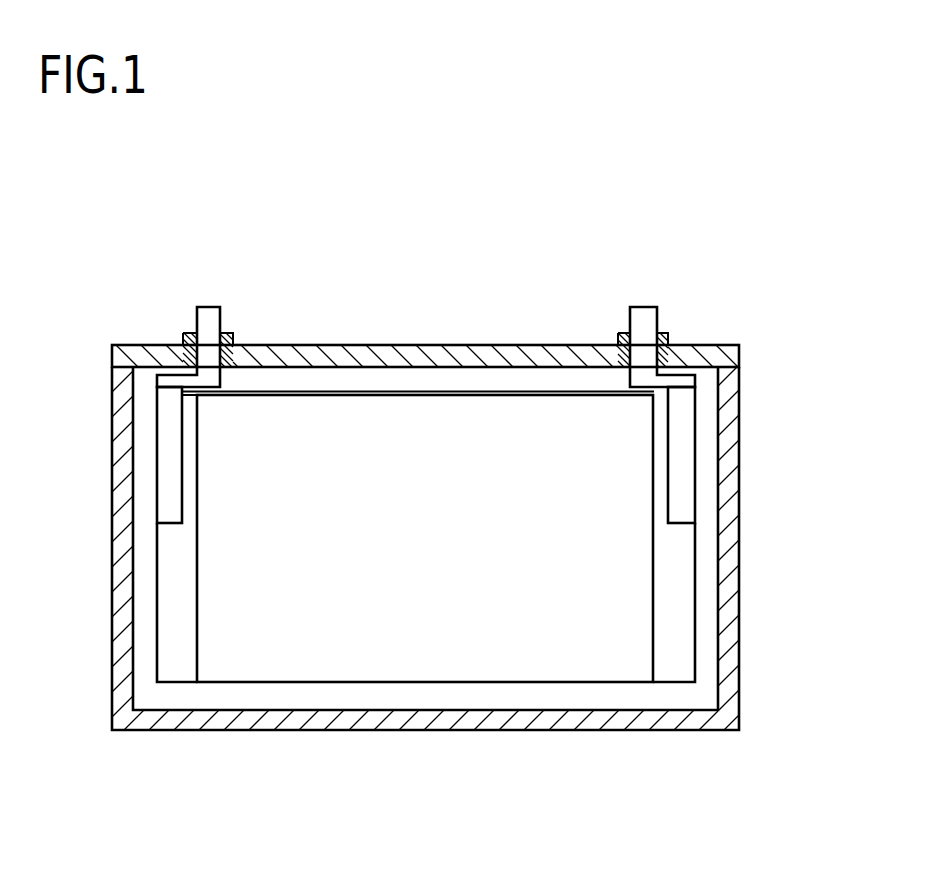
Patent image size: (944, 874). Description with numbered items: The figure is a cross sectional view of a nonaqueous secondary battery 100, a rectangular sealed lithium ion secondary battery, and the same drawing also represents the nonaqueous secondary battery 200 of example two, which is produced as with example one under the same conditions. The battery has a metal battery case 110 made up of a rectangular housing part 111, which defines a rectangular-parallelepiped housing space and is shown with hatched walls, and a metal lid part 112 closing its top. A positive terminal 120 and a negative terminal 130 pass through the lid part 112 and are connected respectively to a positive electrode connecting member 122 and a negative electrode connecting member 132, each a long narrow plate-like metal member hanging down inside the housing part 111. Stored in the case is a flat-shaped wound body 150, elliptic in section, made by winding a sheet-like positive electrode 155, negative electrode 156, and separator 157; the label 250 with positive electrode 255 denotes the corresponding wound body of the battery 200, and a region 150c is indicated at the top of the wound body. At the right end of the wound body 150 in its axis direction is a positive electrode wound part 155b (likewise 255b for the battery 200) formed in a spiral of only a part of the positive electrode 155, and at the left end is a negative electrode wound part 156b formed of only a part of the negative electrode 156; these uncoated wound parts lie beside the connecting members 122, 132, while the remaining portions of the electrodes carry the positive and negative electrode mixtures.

The nonaqueous secondary battery 100 is at (482, 253).
The nonaqueous secondary battery 200 is at (454, 531).
The battery case 110 is at (795, 312).
The rectangular housing part 111 is at (727, 378).
The lid part 112 is at (726, 355).
The positive terminal 120 is at (646, 320).
The positive electrode connecting member 122 is at (687, 510).
The negative terminal 130 is at (211, 320).
The negative electrode connecting member 132 is at (168, 508).
The wound body 150 is at (348, 657).
The electrode assembly (second embodiment) 250 is at (454, 476).
The upper end of electrode assembly 150c is at (268, 392).
The positive electrode 155 is at (454, 476).
The positive electrode (second embodiment) 255 is at (454, 476).
The negative electrode 156 is at (454, 476).
The separator 157 is at (454, 476).
The positive electrode wound part 155b is at (670, 615).
The positive electrode uncoated portion (second embodiment) 255b is at (674, 602).
The negative electrode wound part 156b is at (170, 627).